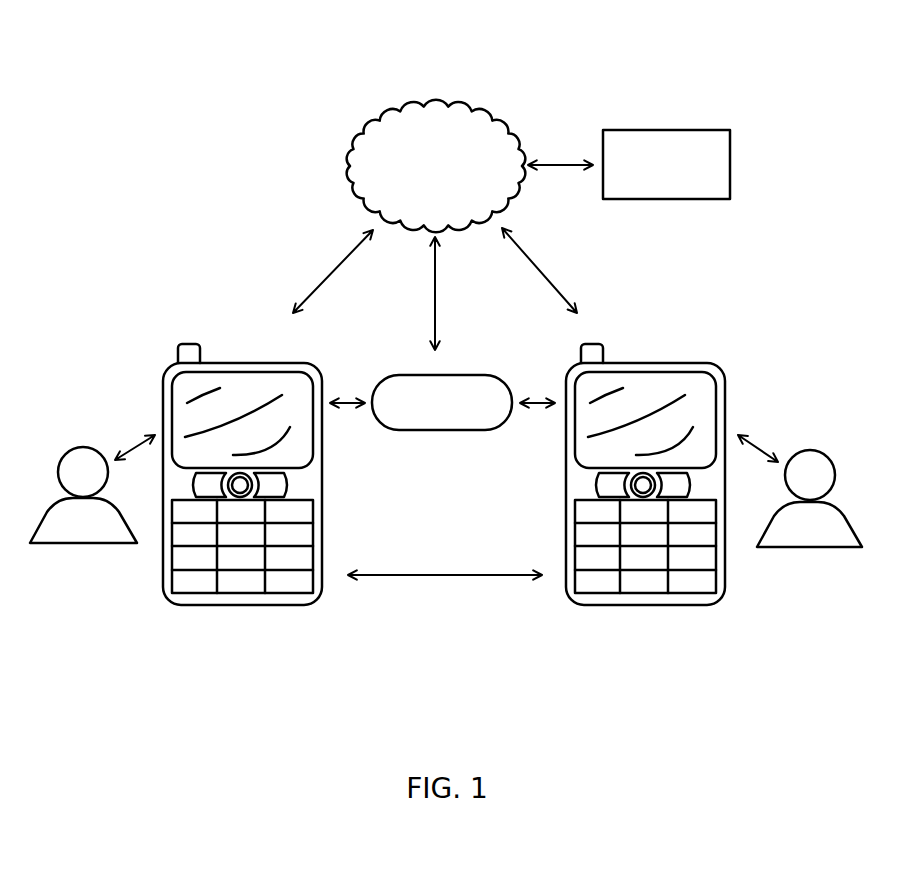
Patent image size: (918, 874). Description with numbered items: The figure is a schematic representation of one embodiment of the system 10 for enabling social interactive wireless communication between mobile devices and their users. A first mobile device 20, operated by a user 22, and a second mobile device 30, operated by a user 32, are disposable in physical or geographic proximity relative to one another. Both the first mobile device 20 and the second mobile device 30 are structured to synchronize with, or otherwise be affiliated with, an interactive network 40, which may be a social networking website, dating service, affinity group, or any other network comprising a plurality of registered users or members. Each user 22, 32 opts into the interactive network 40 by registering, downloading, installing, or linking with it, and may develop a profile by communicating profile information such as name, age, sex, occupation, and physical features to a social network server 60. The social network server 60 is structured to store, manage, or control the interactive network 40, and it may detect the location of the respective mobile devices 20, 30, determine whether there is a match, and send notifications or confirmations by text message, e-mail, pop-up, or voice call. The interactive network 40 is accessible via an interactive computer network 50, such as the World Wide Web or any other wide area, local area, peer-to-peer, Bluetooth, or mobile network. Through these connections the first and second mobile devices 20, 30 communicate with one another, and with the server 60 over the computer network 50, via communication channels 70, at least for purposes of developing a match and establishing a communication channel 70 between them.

The system 10 is at (781, 33).
The first mobile device 20 is at (240, 606).
The user 22 is at (90, 545).
The second mobile device 30 is at (643, 606).
The user 32 is at (818, 549).
The interactive network 40 is at (442, 402).
The interactive computer network 50 is at (436, 166).
The social network server 60 is at (666, 164).
The communication channel 70 is at (332, 268).